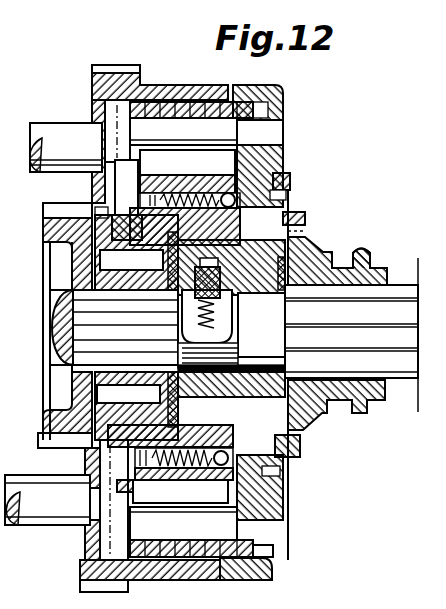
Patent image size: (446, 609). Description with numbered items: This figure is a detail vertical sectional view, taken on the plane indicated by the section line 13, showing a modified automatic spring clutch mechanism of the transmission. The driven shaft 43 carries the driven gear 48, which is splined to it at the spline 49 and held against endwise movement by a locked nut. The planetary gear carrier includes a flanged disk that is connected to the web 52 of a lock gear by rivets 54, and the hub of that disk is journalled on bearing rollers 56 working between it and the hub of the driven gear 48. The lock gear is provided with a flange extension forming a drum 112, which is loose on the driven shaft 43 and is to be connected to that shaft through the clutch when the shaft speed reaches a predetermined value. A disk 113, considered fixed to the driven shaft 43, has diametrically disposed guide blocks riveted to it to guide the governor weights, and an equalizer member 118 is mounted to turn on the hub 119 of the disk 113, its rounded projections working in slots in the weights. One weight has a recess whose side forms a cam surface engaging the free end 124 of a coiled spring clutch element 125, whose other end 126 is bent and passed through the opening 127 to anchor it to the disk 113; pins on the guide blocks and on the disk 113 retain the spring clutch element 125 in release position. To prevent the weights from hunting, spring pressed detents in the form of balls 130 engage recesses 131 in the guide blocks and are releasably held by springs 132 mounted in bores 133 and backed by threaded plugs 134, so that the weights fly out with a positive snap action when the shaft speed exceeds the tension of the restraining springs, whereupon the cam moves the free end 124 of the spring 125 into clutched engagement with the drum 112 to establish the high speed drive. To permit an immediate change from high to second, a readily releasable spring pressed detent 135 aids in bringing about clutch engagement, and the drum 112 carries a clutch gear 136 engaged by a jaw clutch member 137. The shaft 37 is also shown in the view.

The section line 13- 13 is at (88, 28).
The spindle shaft 37 is at (360, 275).
The driven shaft 43 is at (398, 385).
The driven gear 48 is at (45, 440).
The spline 49 is at (93, 292).
The web 52 is at (85, 462).
The rivets 54 is at (93, 200).
The bearing rollers 56 is at (135, 258).
The drum 112 is at (168, 85).
The disk 113 is at (284, 106).
The equalizer member 118 is at (320, 243).
The hub 119 is at (309, 286).
The free end 124 is at (133, 488).
The coiled spring clutch element 125 is at (182, 555).
The other end 126 is at (262, 551).
The opening 127 is at (272, 572).
The balls 130 is at (283, 184).
The recesses 131 is at (300, 218).
The springs 132 is at (187, 162).
The bores 133 is at (190, 181).
The plugs 134 is at (140, 195).
The spring pressed detent 135 is at (240, 292).
The clutch gear 136 is at (300, 450).
The jaw clutch member 137 is at (395, 292).